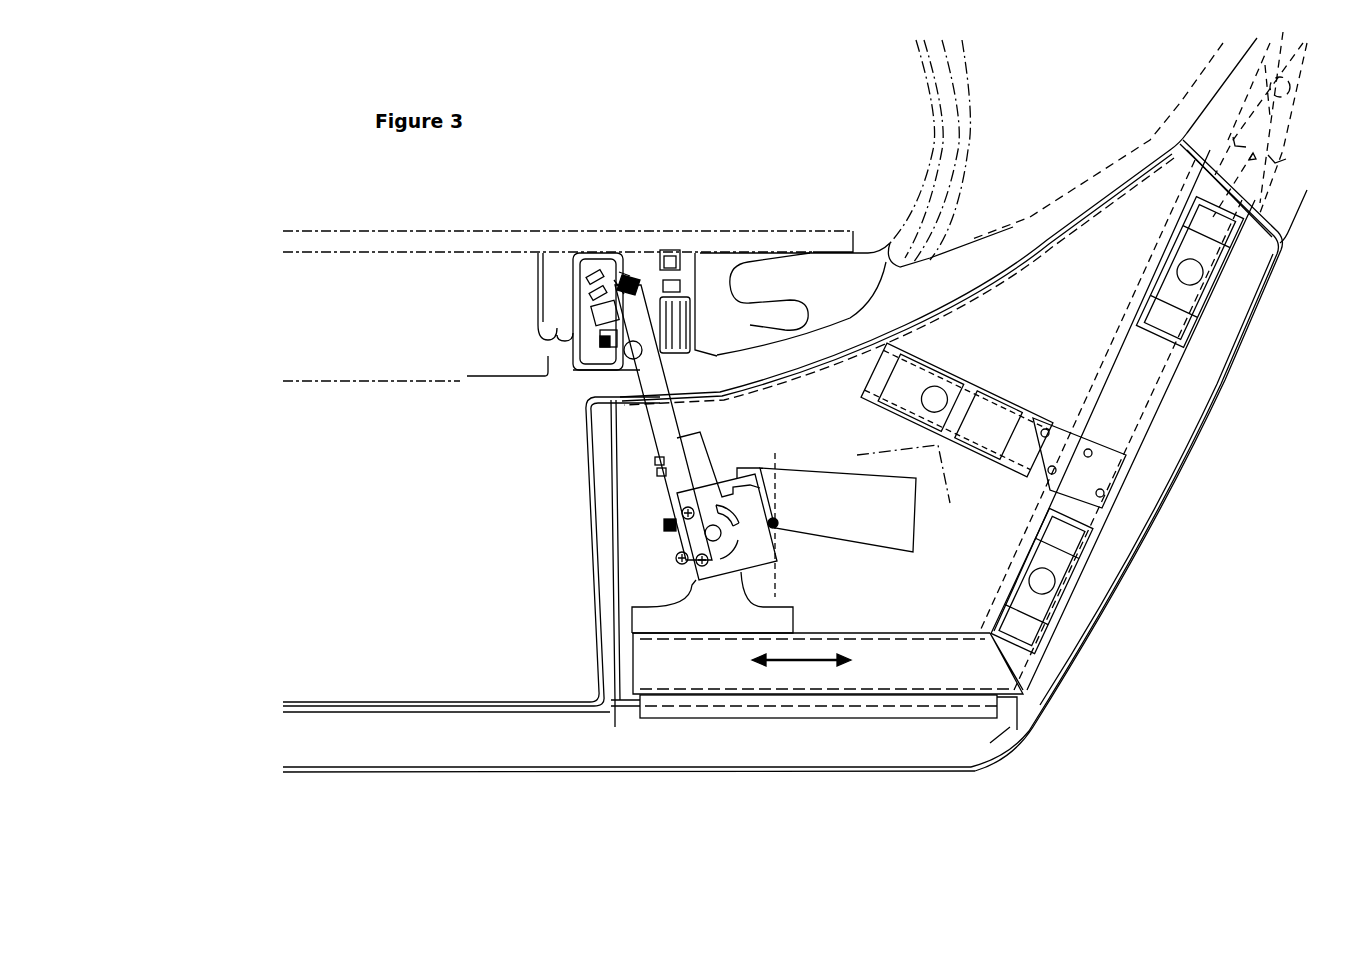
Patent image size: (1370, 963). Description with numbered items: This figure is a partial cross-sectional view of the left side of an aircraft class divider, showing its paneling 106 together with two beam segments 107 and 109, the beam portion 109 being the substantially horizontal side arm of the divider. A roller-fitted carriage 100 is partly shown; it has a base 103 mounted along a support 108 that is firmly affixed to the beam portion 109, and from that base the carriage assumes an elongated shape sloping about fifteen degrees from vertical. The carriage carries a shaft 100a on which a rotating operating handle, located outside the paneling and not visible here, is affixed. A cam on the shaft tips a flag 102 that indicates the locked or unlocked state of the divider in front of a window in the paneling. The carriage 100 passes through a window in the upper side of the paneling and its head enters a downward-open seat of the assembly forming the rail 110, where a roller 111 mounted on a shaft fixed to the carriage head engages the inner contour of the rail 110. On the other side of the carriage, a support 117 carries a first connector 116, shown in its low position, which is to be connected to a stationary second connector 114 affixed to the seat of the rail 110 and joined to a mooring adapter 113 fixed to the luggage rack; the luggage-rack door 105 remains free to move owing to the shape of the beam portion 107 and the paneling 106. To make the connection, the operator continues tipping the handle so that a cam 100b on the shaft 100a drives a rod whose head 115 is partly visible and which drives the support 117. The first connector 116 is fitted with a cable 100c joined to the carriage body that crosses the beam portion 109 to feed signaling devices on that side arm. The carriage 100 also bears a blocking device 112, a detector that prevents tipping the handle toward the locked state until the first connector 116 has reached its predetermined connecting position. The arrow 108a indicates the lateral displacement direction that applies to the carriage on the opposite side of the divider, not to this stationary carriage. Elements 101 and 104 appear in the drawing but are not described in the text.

The roller-fitted carriage 100 is at (650, 432).
The shaft 100a is at (670, 524).
The cam 100b is at (737, 493).
The cable 100c is at (620, 553).
The mounting plate 101 is at (757, 547).
The flag 102 is at (867, 527).
The base 103 is at (660, 613).
The slide housing 104 is at (640, 657).
The door 105 is at (962, 100).
The paneling 106 is at (1090, 210).
The beam segment 107 is at (1100, 547).
The support 108 is at (893, 720).
The arrow 108a is at (803, 673).
The beam portion 109 is at (648, 773).
The rail 110 is at (673, 283).
The roller 111 is at (673, 317).
The blocking device 112 is at (622, 275).
The mooring adapter 113 is at (614, 282).
The second connector 114 is at (600, 280).
The rod head 115 is at (603, 290).
The first connector 116 is at (603, 305).
The support 117 is at (603, 343).